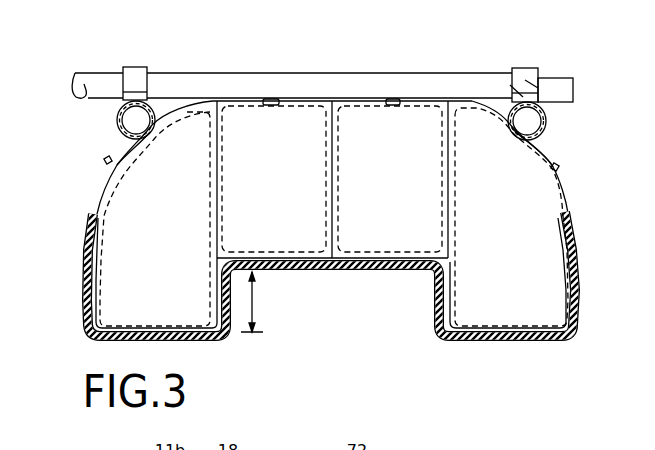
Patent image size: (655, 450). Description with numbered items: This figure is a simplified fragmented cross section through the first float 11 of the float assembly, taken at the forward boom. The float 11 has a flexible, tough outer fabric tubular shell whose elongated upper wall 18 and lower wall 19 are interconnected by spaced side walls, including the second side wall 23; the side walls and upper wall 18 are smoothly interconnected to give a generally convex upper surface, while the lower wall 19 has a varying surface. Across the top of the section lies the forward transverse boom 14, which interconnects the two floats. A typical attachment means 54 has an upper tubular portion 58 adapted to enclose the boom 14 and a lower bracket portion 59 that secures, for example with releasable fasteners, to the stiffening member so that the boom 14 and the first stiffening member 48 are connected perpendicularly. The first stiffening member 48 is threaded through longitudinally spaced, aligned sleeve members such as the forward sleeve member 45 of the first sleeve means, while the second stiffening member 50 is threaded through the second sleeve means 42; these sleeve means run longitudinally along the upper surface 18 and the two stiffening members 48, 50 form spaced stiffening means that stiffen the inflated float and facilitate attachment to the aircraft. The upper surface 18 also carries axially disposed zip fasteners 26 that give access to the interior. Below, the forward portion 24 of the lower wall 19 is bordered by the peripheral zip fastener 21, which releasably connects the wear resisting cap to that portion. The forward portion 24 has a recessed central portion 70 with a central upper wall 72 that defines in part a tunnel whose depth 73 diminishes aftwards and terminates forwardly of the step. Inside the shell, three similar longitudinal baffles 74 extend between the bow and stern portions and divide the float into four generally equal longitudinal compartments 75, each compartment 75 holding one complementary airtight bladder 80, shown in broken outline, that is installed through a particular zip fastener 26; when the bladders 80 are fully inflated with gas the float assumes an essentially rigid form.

The first float 11 is at (343, 216).
The forward transverse boom 14 is at (348, 73).
The upper wall 18 is at (262, 99).
The lower wall 19 is at (177, 338).
The peripheral zip fastener 21 is at (87, 226).
The second side wall 23 is at (563, 195).
The forward portion of the lower wall 24 is at (103, 181).
The axially disposed zip fasteners 26 is at (277, 99).
The second sleeve means 42 is at (122, 137).
The forward sleeve member 45 is at (547, 148).
The first elongated stiffening member 48 is at (547, 123).
The second stiffening member 50 is at (118, 120).
The attachment means 54 is at (141, 66).
The upper tubular portion 58 is at (525, 80).
The lower bracket portion 59 is at (523, 97).
The recessed central portion 70 is at (367, 325).
The central upper wall 72 is at (317, 272).
The depth 73 is at (253, 302).
The longitudinal baffles 74 is at (226, 157).
The compartments 75 is at (144, 218).
The bladder 80 is at (313, 108).